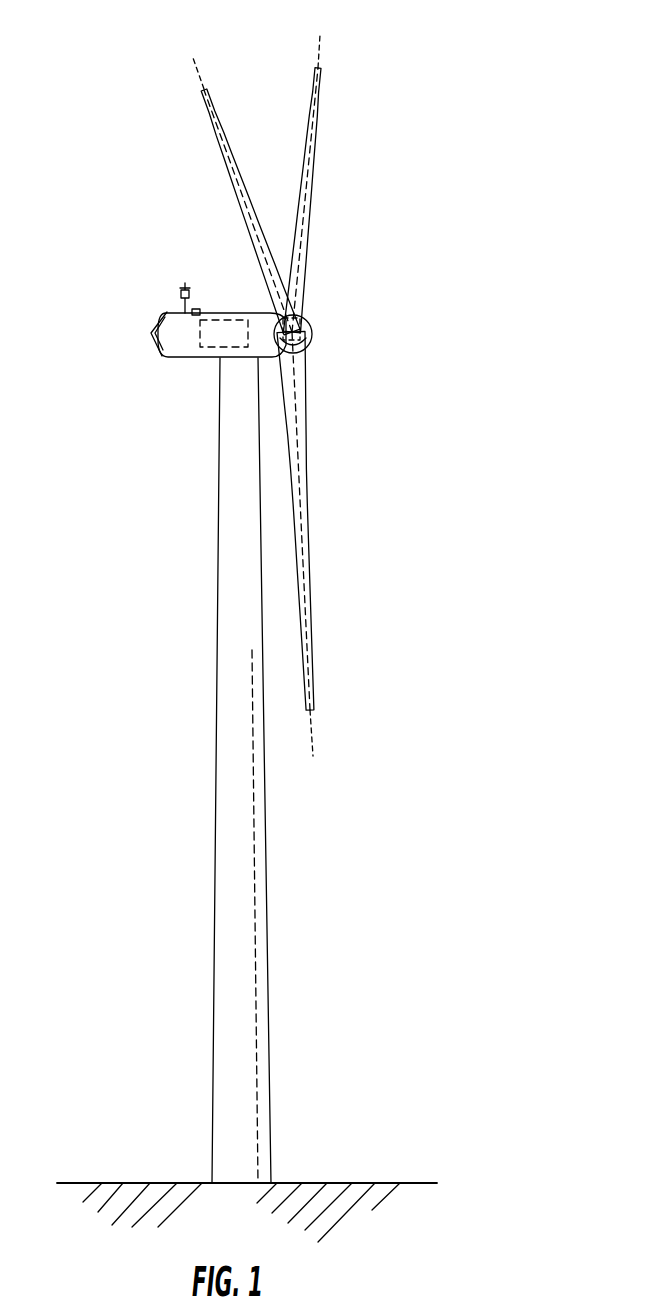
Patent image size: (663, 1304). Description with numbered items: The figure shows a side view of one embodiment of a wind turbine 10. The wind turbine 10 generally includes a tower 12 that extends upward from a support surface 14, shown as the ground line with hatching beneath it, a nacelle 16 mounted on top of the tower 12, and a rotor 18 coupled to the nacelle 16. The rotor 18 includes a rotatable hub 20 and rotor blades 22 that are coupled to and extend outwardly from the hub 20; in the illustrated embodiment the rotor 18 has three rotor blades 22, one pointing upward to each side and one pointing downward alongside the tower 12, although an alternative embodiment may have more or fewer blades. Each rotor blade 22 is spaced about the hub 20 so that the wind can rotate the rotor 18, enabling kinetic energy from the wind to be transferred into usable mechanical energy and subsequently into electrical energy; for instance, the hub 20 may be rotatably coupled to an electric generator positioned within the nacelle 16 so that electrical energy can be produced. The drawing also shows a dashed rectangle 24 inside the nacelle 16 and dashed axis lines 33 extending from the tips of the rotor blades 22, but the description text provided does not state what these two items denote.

The wind turbine 10 is at (405, 155).
The tower 12 is at (228, 883).
The support surface 14 is at (138, 1183).
The nacelle 16 is at (195, 360).
The rotor 18 is at (318, 305).
The rotatable hub 20 is at (314, 337).
The rotor blade 22 is at (307, 115).
The turbine controller 24 is at (228, 318).
The pitch axis 33 is at (200, 80).